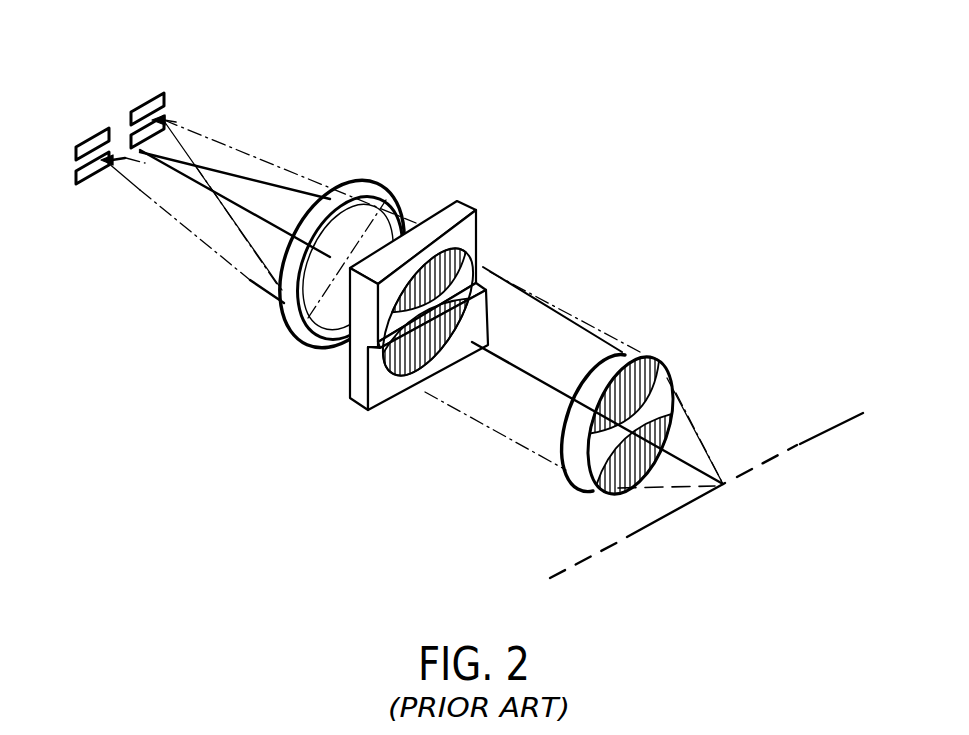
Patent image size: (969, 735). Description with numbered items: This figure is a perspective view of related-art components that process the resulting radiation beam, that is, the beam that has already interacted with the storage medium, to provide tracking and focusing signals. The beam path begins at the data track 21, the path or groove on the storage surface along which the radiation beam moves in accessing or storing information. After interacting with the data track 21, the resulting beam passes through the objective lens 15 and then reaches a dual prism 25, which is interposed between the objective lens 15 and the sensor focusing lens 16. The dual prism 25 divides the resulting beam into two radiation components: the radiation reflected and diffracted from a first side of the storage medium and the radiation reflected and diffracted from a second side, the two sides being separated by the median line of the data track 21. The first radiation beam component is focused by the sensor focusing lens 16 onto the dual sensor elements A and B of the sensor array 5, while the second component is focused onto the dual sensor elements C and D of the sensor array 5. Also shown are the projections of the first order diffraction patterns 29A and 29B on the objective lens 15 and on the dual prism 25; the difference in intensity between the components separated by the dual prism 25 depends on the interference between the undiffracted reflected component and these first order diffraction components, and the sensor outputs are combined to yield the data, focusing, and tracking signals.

The sensor array 5 is at (108, 74).
The sensor element A is at (79, 135).
The sensor element B is at (91, 189).
The sensor element C is at (156, 90).
The sensor element D is at (163, 132).
The sensor focusing lens 16 is at (383, 190).
The dual prism 25 is at (462, 200).
The first order diffraction pattern 29A is at (462, 258).
The first order diffraction pattern 29B is at (410, 378).
The objective lens 15 is at (678, 376).
The data track 21 is at (812, 436).